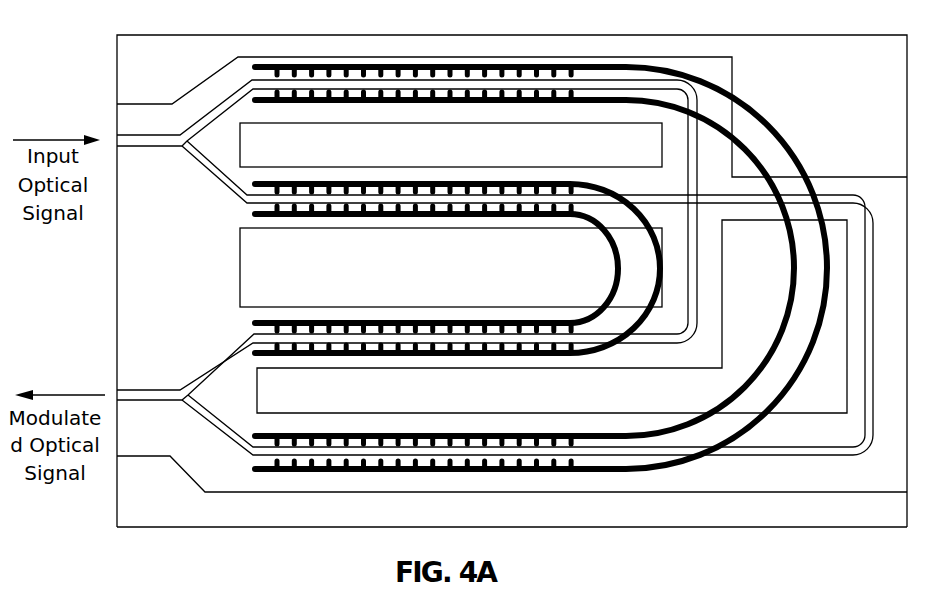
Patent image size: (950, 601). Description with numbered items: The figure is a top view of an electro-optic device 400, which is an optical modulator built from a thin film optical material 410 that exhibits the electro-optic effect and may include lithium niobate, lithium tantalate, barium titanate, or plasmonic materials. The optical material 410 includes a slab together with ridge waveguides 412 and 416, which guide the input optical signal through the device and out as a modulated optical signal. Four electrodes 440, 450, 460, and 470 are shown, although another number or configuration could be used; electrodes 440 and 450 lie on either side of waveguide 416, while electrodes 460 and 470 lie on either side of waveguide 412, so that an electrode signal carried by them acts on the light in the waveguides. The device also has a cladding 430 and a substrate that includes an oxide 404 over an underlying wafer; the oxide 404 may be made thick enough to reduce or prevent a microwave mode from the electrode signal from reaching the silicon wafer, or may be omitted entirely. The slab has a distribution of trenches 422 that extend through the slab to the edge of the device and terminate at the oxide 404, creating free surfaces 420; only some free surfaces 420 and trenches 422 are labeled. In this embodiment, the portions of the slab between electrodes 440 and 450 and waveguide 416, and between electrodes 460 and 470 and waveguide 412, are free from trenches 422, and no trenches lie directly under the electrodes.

The electro-optic device 400 is at (76, 30).
The oxide 404 is at (512, 110).
The cladding 430 is at (512, 110).
The optical material 410 is at (135, 457).
The ridge waveguide 412 is at (213, 185).
The ridge waveguide 416 is at (197, 112).
The free surfaces 420 is at (825, 507).
The trenches 422 is at (363, 508).
The electrode 440 is at (407, 63).
The electrode 450 is at (708, 115).
The electrode 460 is at (255, 322).
The electrode 470 is at (255, 355).